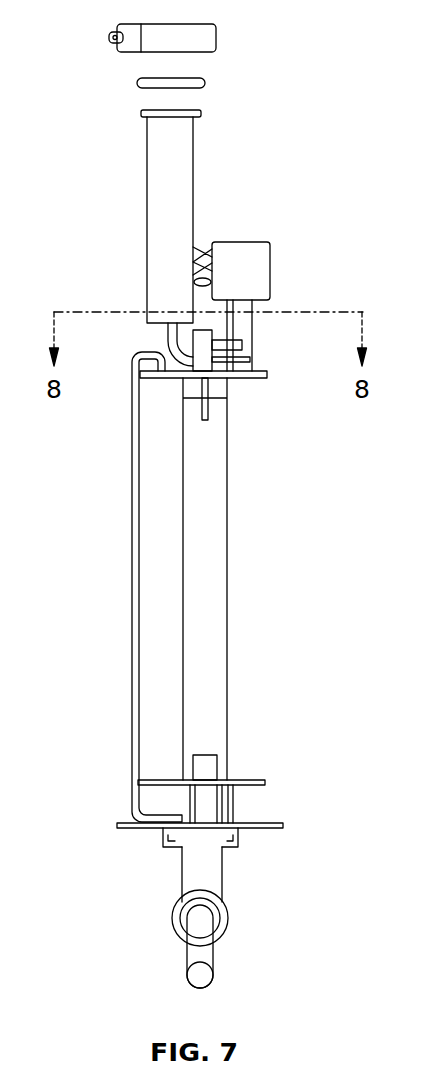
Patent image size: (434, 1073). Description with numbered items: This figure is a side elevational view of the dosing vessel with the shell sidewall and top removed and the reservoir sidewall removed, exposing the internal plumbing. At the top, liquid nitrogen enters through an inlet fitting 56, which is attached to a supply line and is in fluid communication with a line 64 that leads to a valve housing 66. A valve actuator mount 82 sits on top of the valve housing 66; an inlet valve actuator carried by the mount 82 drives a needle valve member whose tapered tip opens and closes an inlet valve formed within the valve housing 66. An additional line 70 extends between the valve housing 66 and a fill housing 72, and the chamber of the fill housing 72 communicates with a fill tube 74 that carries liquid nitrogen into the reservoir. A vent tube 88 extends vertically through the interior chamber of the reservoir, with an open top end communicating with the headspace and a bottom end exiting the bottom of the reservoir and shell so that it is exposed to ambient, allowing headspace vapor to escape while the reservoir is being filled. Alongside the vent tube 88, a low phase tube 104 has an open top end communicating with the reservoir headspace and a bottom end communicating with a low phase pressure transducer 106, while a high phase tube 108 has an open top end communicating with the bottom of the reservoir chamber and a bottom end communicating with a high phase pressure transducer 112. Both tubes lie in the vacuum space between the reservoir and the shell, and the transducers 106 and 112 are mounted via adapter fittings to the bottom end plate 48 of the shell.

The bottom end plate 48 is at (282, 828).
The inlet fitting 56 is at (147, 222).
The line 64 is at (166, 330).
The valve housing 66 is at (250, 356).
The line 70 is at (237, 378).
The fill housing 72 is at (205, 326).
The fill tube 74 is at (200, 392).
The valve actuator mount 82 is at (272, 275).
The vent tube 88 is at (227, 573).
The low phase tube 104 is at (131, 628).
The low phase pressure sensor 106 is at (172, 845).
The high phase tube 108 is at (233, 808).
The high phase pressure sensor 112 is at (232, 845).